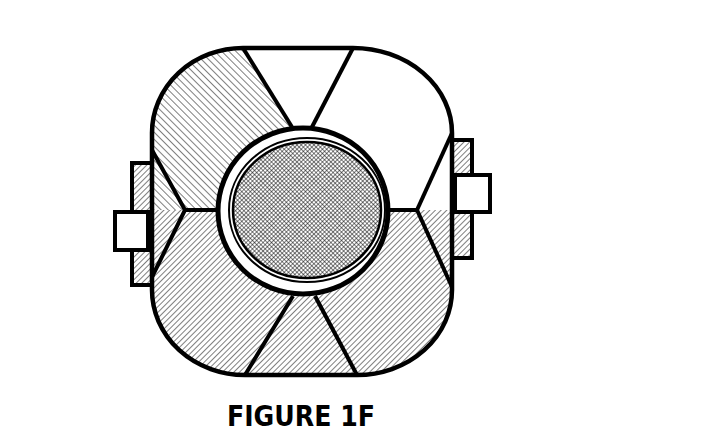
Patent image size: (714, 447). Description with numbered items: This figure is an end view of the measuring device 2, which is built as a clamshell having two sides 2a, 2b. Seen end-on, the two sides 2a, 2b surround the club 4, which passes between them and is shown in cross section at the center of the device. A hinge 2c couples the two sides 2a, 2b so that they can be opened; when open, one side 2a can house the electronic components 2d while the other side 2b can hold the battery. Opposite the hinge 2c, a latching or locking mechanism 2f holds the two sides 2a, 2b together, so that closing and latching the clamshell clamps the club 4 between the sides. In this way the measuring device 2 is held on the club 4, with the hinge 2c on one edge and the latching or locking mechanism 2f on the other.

The measuring device 2 is at (541, 57).
The side 2a is at (208, 313).
The side 2b is at (352, 88).
The hinge 2c is at (493, 187).
The electronic components 2d is at (198, 363).
The latching or locking mechanism 2f is at (114, 230).
The club 4 is at (372, 172).